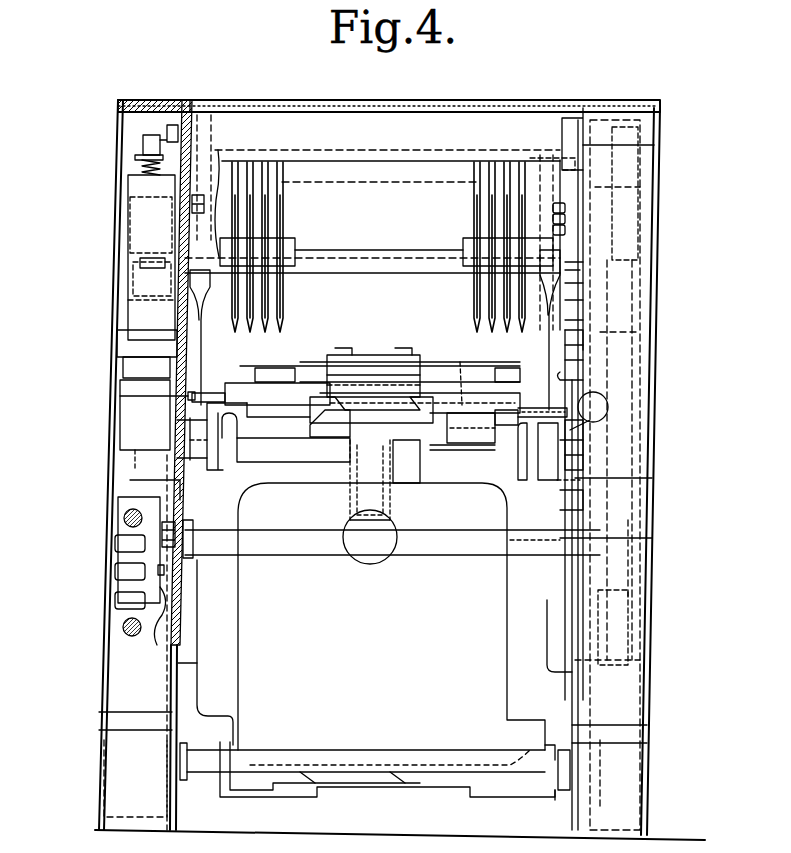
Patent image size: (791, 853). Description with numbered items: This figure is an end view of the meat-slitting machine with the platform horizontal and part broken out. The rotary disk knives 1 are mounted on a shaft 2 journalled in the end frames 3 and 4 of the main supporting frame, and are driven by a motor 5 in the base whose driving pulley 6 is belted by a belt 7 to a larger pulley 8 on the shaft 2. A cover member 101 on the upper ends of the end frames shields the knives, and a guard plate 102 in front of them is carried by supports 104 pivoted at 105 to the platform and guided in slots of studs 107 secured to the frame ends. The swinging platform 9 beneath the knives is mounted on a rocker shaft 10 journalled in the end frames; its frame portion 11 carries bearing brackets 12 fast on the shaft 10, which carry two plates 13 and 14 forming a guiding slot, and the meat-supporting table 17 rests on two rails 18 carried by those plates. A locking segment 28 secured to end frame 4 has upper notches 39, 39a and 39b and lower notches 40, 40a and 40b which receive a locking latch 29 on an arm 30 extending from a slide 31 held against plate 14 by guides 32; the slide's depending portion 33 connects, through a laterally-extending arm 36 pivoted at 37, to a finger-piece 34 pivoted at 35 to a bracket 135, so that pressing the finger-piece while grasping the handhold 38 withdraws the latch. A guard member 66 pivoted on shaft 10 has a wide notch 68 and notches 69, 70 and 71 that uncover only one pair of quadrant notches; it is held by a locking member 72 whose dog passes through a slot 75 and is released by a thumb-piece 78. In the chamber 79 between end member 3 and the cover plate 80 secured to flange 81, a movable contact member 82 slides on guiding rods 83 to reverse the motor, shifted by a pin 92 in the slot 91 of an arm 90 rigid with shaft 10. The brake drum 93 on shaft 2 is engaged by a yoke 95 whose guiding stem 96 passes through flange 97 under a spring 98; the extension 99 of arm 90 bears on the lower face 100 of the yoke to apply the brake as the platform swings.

The rotary disk knives 1 is at (252, 236).
The shaft 2 is at (352, 258).
The end frame 3 is at (182, 233).
The end frame 4 is at (656, 187).
The motor 5 is at (400, 690).
The driving pulley 6 is at (630, 601).
The belt 7 is at (630, 536).
The pulley 8 is at (665, 332).
The swinging platform 9 is at (218, 396).
The rocker shaft 10 is at (300, 465).
The frame portion 11 is at (259, 405).
The bearing brackets 12 is at (236, 448).
The plate 13 is at (285, 405).
The plate 14 is at (475, 382).
The meat-supporting table 17 is at (275, 368).
The rails 18 is at (262, 370).
The locking segment 28 is at (600, 379).
The locking latch 29 is at (590, 433).
The arm 30 is at (585, 443).
The slide 31 is at (457, 372).
The guides 32 is at (508, 424).
The depending portion 33 is at (467, 428).
The finger-piece 34 is at (293, 450).
The pivot 35 is at (355, 400).
The laterally-extending arm 36 is at (415, 460).
The pivot 37 is at (350, 480).
The handhold 38 is at (345, 522).
The notch 39 is at (590, 265).
The notch 39a is at (578, 300).
The notch 39b is at (585, 336).
The notch 40 is at (560, 536).
The notch 40a is at (565, 528).
The notch 40b is at (570, 501).
The guard member 66 is at (580, 351).
The wide notch 68 is at (600, 539).
The notch 69 is at (575, 363).
The notch 70 is at (580, 318).
The notch 71 is at (575, 278).
The locking member 72 is at (655, 479).
The slot 75 is at (580, 471).
The thumb-piece 78 is at (600, 408).
The chamber 79 is at (130, 121).
The cover plate 80 is at (125, 304).
The flange 81 is at (157, 104).
The movable contact member 82 is at (122, 523).
The guiding rods 83 is at (124, 516).
The arm 90 is at (150, 491).
The slot 91 is at (188, 526).
The pin 92 is at (165, 571).
The brake drum 93 is at (130, 212).
The yoke 95 is at (135, 291).
The guiding stem 96 is at (140, 146).
The flange 97 is at (135, 157).
The spring 98 is at (140, 168).
The extension 99 is at (142, 415).
The lower face 100 is at (122, 386).
The cover member 101 is at (345, 104).
The guard plate 102 is at (552, 160).
The supports 104 is at (200, 330).
The pivot 105 is at (186, 396).
The studs 107 is at (202, 200).
The bracket 135 is at (345, 425).